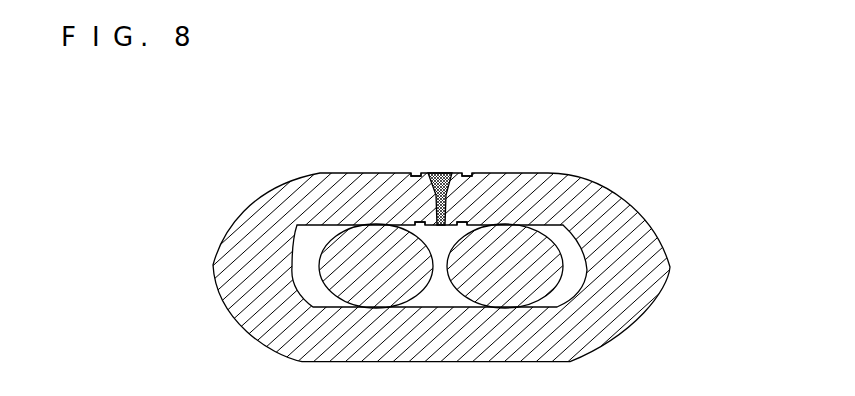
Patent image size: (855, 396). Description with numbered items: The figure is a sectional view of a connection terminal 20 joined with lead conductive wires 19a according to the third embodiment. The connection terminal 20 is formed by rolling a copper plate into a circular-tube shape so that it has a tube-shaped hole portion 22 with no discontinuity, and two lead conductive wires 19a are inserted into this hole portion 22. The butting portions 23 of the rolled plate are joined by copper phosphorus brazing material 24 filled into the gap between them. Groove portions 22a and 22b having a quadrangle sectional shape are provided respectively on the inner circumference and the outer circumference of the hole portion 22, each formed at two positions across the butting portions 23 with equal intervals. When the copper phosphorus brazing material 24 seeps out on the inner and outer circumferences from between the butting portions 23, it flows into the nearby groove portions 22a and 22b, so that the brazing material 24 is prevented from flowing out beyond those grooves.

The lead conductive wire 19a is at (543, 257).
The connection terminal 20 is at (590, 357).
The hole portion 22 is at (585, 270).
The groove portion 22a is at (421, 224).
The groove portion 22b is at (417, 172).
The butting portion 23 is at (422, 212).
The copper phosphorus brazing material 24 is at (431, 172).